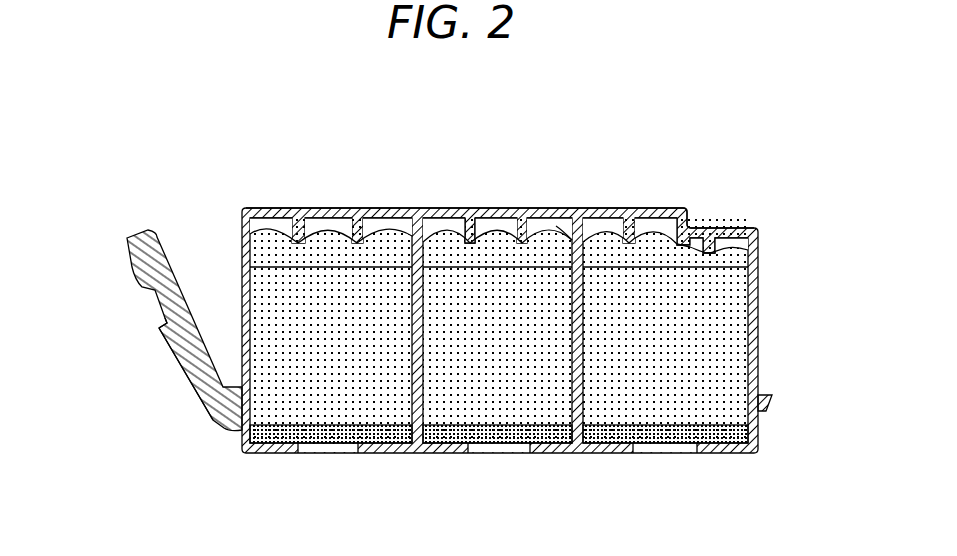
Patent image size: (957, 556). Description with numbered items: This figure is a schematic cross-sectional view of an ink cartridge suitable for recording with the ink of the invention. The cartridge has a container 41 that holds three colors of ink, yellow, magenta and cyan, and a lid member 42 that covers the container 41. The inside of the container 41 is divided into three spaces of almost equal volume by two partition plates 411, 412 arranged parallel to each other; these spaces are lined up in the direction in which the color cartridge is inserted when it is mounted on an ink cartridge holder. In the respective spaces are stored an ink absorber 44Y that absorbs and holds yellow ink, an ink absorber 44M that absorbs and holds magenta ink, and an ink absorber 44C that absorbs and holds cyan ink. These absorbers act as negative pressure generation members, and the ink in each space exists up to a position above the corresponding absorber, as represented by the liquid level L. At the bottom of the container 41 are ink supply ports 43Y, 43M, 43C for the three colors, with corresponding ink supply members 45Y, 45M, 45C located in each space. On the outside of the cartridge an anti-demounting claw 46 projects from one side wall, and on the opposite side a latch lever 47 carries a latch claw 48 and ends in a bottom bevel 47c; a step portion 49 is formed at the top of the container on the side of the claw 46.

The container 41 is at (758, 325).
The lid member 42 is at (242, 212).
The ink supply port 43Y is at (335, 448).
The ink supply port 43M is at (505, 448).
The ink supply port 43C is at (670, 448).
The ink absorber 44Y is at (322, 232).
The ink absorber 44M is at (506, 241).
The ink absorber 44C is at (663, 240).
The ink supply member 45Y is at (278, 437).
The ink supply member 45M is at (447, 437).
The ink supply member 45C is at (612, 437).
The anti-demounting claw 46 is at (773, 398).
The latch lever 47 is at (142, 257).
The bottom bevel 47c is at (175, 358).
The latch claw 48 is at (162, 323).
The step portion 49 is at (718, 247).
The partition plate 411 is at (468, 242).
The partition plate 412 is at (563, 250).
The liquid level L is at (632, 265).